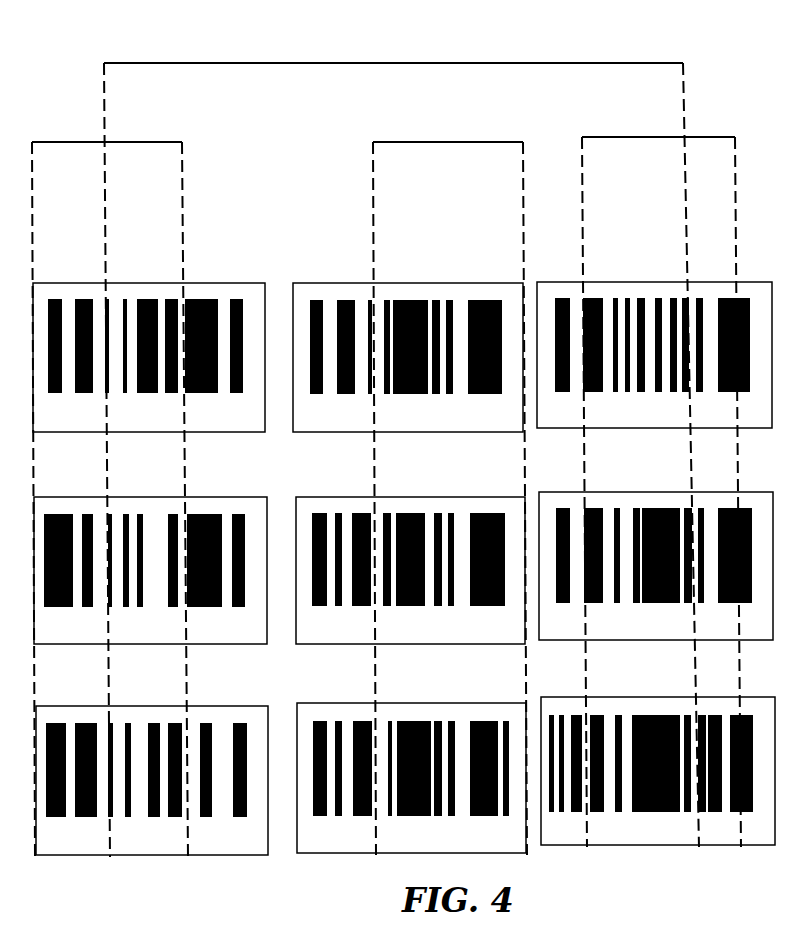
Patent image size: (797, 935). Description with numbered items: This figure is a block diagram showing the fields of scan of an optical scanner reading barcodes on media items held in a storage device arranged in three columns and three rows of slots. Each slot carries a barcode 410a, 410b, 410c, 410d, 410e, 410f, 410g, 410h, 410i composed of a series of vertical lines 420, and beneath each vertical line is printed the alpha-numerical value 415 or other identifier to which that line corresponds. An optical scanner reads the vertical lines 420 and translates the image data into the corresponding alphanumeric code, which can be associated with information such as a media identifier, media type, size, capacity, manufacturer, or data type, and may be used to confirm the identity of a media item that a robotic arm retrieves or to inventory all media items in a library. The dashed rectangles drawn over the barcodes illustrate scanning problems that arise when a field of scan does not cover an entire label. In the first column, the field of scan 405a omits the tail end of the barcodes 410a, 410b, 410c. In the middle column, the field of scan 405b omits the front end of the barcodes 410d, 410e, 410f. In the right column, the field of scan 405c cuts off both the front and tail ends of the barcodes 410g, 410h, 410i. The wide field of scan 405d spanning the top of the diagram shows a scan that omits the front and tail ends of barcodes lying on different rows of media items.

The field of scan 405a is at (135, 142).
The field of scan 405b is at (427, 142).
The field of scan 405c is at (619, 137).
The field of scan 405d is at (483, 63).
The barcode 410a is at (150, 366).
The barcode 410b is at (202, 497).
The barcode 410c is at (203, 706).
The barcode 410d is at (407, 283).
The barcode 410e is at (409, 497).
The barcode 410f is at (410, 703).
The barcode 410g is at (592, 282).
The barcode 410h is at (593, 492).
The barcode 410i is at (595, 697).
The alpha-numerical value 415 is at (55, 420).
The barcode bars 420 is at (60, 299).